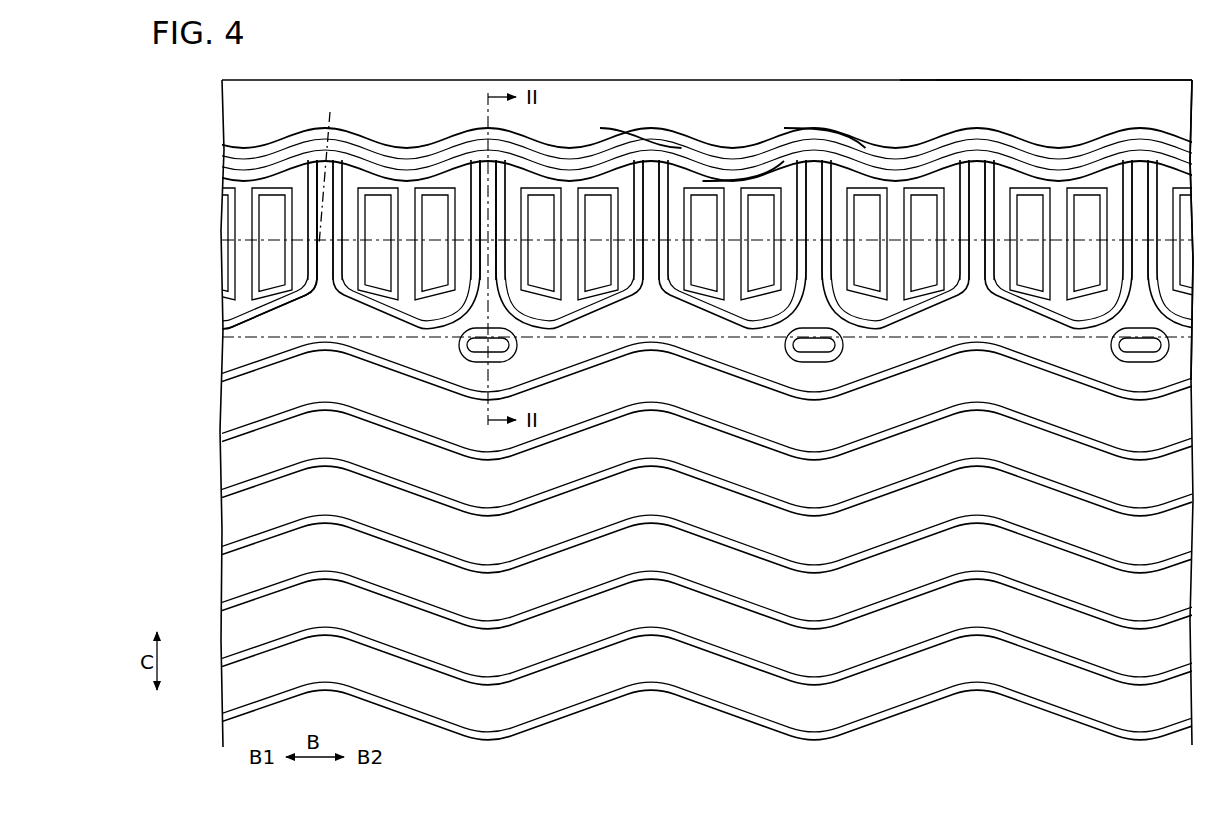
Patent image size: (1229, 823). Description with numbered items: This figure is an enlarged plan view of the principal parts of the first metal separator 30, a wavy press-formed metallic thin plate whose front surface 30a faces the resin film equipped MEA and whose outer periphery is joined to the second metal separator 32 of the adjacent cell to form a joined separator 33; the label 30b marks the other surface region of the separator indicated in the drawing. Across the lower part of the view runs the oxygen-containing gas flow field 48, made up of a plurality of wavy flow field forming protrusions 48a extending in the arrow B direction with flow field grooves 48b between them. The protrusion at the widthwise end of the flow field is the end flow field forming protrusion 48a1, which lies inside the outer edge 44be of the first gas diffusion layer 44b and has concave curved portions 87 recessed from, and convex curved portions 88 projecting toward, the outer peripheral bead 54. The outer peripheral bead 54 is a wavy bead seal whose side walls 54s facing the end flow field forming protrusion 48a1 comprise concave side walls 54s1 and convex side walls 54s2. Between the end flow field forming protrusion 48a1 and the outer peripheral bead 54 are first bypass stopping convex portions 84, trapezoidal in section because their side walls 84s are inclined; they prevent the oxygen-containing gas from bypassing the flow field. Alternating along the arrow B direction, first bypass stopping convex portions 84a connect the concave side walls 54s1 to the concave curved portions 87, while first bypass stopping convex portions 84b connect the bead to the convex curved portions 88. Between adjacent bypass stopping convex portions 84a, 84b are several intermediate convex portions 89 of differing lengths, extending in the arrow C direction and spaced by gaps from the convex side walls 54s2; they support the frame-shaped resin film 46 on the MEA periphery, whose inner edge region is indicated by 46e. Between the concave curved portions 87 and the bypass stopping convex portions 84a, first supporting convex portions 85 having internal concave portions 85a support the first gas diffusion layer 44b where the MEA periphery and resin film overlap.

The joined separator 33 is at (373, 36).
The first metal separator 30 is at (1088, 77).
The front surface 30a is at (957, 100).
The rotor second portion 30b is at (997, 100).
The second metal separator 32 is at (1120, 77).
The outer peripheral bead 54 is at (808, 145).
The side walls 54s is at (651, 125).
The concave side walls 54s1 is at (815, 126).
The convex side walls 54s2 is at (733, 178).
The convex curved portions 88 is at (322, 315).
The first bypass stopping convex portions 84 is at (663, 220).
The first bypass stopping convex portions 84a is at (496, 200).
The first bypass stopping convex portions 84b is at (658, 192).
The side walls 84s is at (474, 215).
The first gas diffusion layer 44b is at (243, 232).
The outer edge 44be is at (332, 166).
The intermediate convex portions 89 is at (435, 212).
The resin film 46 is at (363, 346).
The intermediate region end 46e is at (273, 340).
The first supporting convex portions 85 is at (483, 347).
The concave portions 85a is at (457, 350).
The concave curved portions 87 is at (510, 370).
The oxygen-containing gas flow field 48 is at (796, 584).
The flow field forming protrusions 48a is at (707, 574).
The end flow field forming protrusions 48a1 is at (940, 380).
The flow field grooves 48b is at (862, 432).